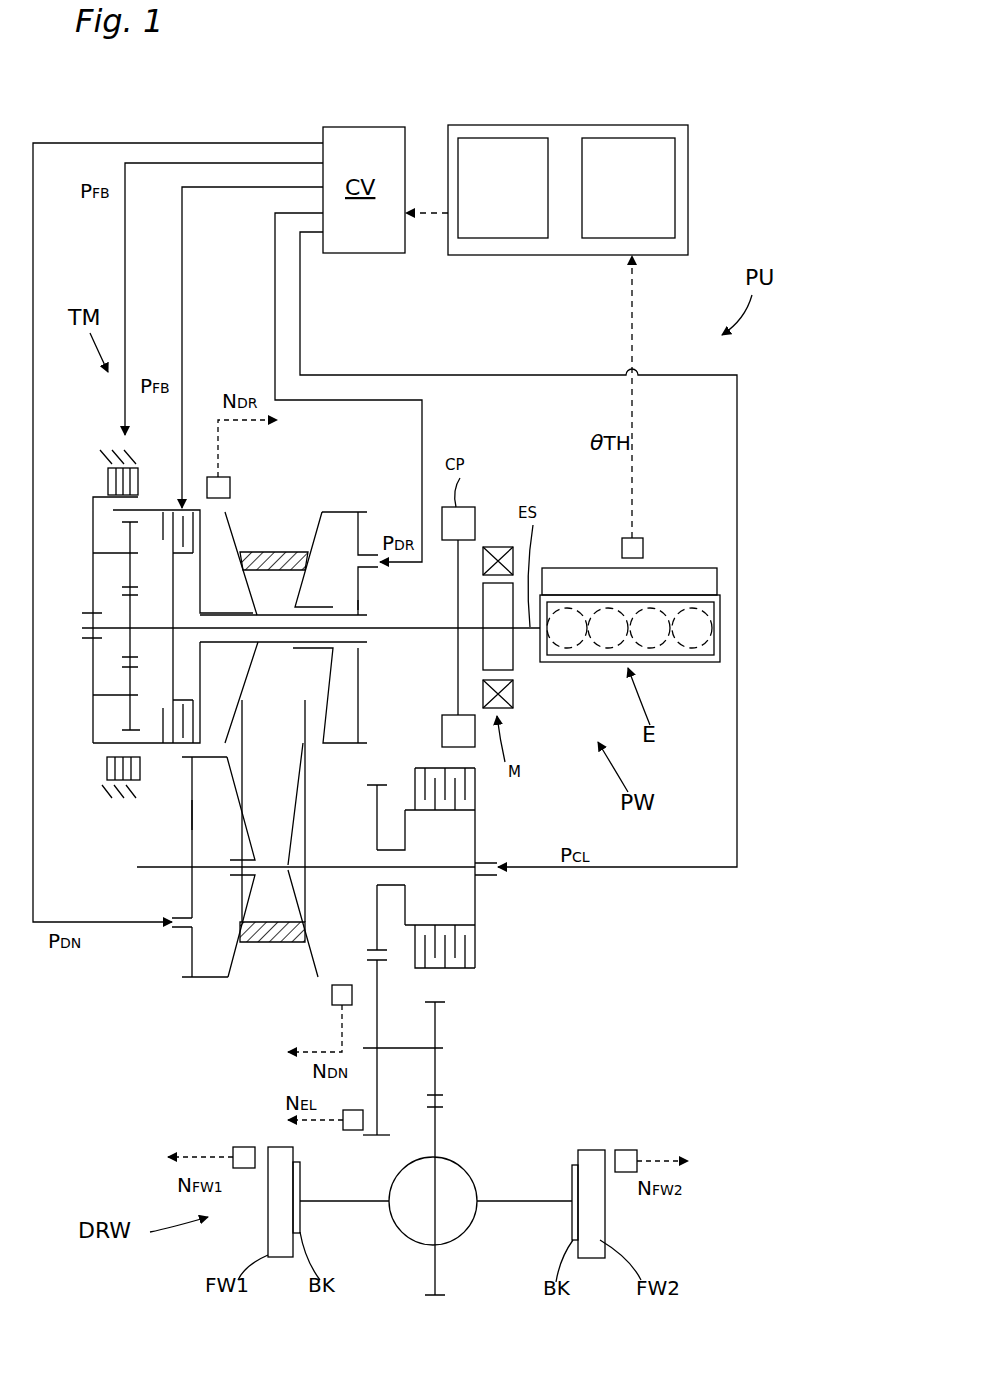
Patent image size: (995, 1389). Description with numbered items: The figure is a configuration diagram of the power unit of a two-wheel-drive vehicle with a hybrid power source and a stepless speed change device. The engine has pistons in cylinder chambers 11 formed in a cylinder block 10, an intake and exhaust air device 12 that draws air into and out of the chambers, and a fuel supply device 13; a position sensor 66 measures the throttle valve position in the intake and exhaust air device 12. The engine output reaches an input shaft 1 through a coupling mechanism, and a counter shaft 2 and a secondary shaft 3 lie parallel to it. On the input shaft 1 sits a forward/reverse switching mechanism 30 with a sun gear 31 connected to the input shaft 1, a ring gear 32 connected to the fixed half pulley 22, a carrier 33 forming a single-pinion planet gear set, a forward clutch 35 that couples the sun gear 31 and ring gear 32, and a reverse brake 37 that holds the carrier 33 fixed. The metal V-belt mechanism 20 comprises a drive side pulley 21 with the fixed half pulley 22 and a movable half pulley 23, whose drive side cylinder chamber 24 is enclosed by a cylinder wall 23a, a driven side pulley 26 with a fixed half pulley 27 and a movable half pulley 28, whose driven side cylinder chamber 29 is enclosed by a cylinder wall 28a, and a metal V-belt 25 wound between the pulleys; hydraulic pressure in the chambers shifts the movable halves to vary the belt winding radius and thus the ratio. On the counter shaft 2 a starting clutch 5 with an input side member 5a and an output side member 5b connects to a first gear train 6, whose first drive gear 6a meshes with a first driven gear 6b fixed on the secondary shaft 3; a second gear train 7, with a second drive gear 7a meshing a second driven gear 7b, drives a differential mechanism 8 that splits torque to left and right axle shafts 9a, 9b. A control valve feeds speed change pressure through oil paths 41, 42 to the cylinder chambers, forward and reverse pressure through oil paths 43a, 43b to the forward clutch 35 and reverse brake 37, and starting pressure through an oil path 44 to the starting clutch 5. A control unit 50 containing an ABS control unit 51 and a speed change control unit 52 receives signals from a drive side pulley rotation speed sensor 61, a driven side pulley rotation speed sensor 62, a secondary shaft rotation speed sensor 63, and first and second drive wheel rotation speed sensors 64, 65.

The input shaft 1 is at (419, 632).
The counter shaft 2 is at (343, 870).
The secondary shaft 3 is at (384, 1045).
The starting clutch 5 is at (428, 884).
The input side member 5a is at (475, 826).
The output side member 5b is at (405, 840).
The first gear train 6 is at (403, 892).
The first drive gear 6a is at (377, 815).
The first driven gear 6b is at (372, 1137).
The second gear train 7 is at (475, 1177).
The second drive gear 7a is at (437, 1030).
The second driven gear 7b is at (432, 1276).
The differential mechanism 8 is at (401, 1232).
The left axle shaft 9a is at (375, 1201).
The right axle shaft 9b is at (488, 1200).
The cylinder block 10 is at (632, 613).
The cylinder chamber 11 is at (608, 606).
The intake and exhaust air device 12 is at (553, 568).
The fuel supply device 13 is at (672, 602).
The metal V-belt mechanism 20 is at (328, 698).
The drive side pulley 21 is at (359, 608).
The fixed half pulley 22 is at (235, 520).
The movable half pulley 23 is at (312, 512).
The cylinder wall 23a is at (358, 596).
The drive side cylinder chamber 24 is at (332, 565).
The metal V-belt 25 is at (305, 745).
The driven side pulley 26 is at (211, 886).
The fixed half pulley 27 is at (312, 983).
The movable half pulley 28 is at (235, 962).
The cylinder wall 28a is at (192, 836).
The driven side cylinder chamber 29 is at (205, 867).
The forward/reverse switching mechanism 30 is at (202, 594).
The sun gear 31 is at (130, 612).
The ring gear 32 is at (93, 722).
The carrier 33 is at (93, 530).
The forward clutch 35 is at (173, 745).
The reverse brake 37 is at (108, 478).
The oil path 41 is at (275, 278).
The oil path 42 is at (148, 143).
The oil path 43a is at (182, 305).
The oil path 43b is at (125, 252).
The oil path 44 is at (737, 450).
The control unit 50 is at (492, 255).
The ABS control unit 51 is at (626, 138).
The speed change control unit 52 is at (508, 138).
The drive side pulley rotation speed sensor 61 is at (230, 480).
The driven side pulley rotation speed sensor 62 is at (340, 985).
The secondary shaft rotation speed sensor 63 is at (363, 1115).
The first drive wheel rotation speed sensor 64 is at (242, 1147).
The second drive wheel rotation speed sensor 65 is at (626, 1150).
The position sensor 66 is at (625, 538).